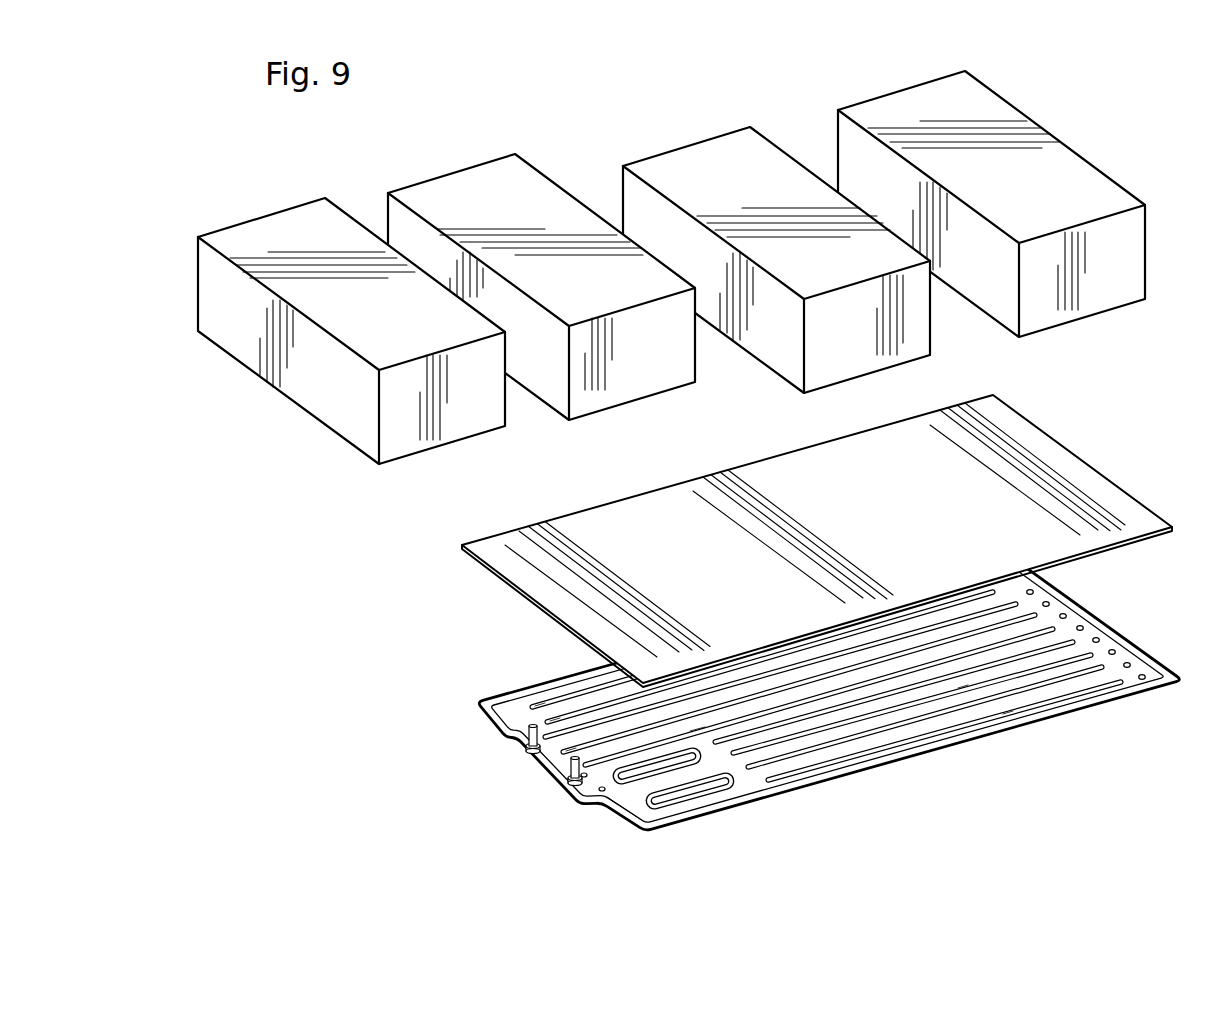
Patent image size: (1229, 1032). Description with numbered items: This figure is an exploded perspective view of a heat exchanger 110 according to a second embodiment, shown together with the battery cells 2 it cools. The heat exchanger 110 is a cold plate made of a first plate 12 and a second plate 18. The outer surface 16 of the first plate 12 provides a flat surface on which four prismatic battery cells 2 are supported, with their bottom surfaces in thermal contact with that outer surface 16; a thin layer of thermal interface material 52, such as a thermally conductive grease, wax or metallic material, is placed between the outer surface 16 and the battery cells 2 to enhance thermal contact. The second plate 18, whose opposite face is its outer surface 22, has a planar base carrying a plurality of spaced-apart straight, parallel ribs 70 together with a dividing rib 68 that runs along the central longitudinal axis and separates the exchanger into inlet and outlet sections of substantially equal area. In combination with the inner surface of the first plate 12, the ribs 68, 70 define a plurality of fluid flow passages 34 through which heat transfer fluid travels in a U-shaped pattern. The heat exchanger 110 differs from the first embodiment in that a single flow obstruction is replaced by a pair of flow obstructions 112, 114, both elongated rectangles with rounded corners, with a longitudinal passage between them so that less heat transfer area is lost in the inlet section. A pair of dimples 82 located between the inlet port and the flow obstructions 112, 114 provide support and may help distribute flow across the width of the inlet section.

The battery cell 2 is at (262, 232).
The first plate 12 is at (1105, 632).
The outer surface of first plate 16 is at (1127, 655).
The second plate 18 is at (1118, 706).
The outer surface of second plate 22 is at (1152, 700).
The fluid flow passages 34 is at (625, 738).
The thermal interface material 52 is at (1068, 466).
The dividing rib 68 is at (695, 730).
The ribs 70 is at (978, 632).
The dimples 82 is at (1065, 612).
The heat exchanger 110 is at (400, 528).
The flow obstruction 112 is at (703, 796).
The flow obstruction 114 is at (640, 780).